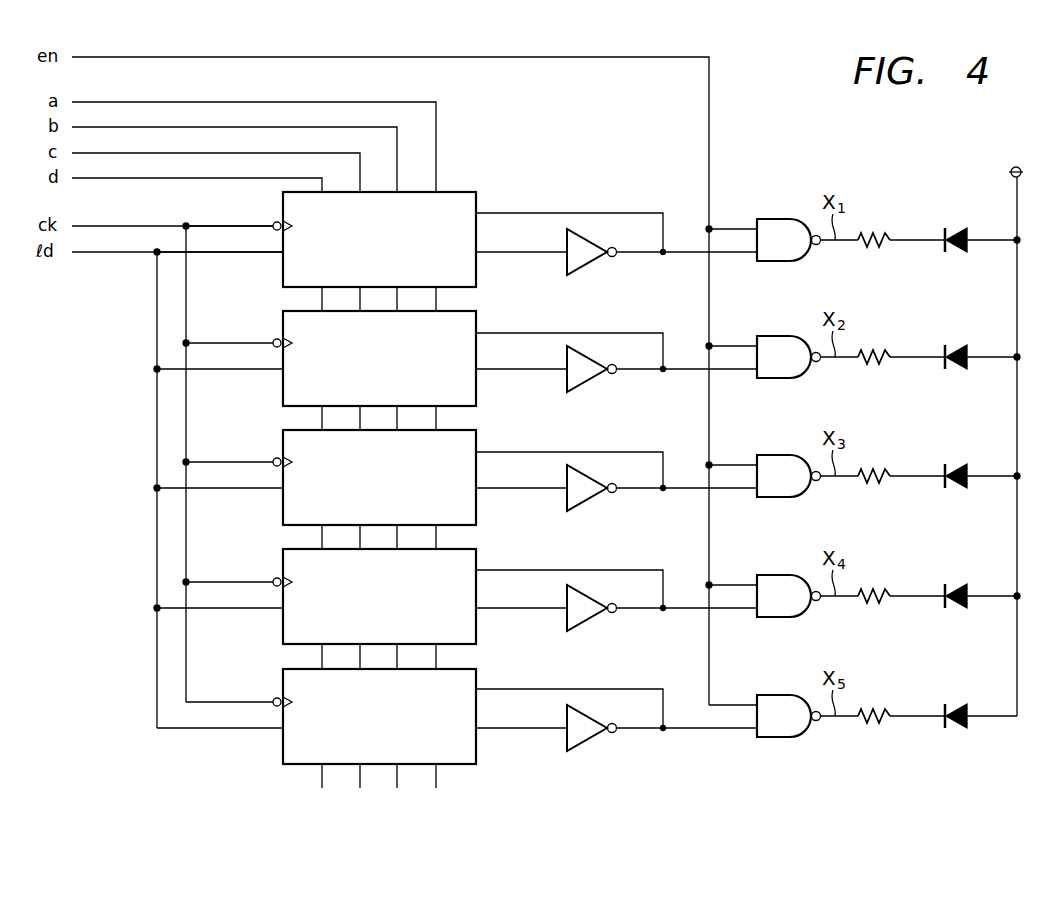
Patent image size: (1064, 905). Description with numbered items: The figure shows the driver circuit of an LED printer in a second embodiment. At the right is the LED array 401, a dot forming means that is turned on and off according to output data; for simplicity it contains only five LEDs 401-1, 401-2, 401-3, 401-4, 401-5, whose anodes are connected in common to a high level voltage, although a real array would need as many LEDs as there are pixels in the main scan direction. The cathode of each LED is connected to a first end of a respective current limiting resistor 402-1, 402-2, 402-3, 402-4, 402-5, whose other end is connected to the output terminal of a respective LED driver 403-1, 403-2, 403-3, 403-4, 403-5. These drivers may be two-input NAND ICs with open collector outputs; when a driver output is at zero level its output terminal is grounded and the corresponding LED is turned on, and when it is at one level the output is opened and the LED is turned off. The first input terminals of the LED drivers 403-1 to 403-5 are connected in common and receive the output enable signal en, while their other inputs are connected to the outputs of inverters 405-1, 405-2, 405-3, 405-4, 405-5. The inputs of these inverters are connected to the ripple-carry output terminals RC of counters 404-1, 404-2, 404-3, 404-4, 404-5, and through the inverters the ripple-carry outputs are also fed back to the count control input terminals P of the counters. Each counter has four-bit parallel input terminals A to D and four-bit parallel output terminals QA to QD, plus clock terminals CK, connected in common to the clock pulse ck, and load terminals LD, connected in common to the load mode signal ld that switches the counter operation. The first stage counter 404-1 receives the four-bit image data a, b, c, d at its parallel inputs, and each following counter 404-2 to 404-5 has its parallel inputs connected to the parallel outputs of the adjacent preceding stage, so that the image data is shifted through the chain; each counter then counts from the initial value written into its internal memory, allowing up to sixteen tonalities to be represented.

The LED array 401 is at (950, 226).
The LED 401-1 is at (953, 252).
The LED 401-2 is at (953, 369).
The LED 401-3 is at (953, 488).
The LED 401-4 is at (953, 608).
The LED 401-5 is at (960, 728).
The current limiting resistor 402-1 is at (866, 247).
The current limiting resistor 402-2 is at (866, 364).
The current limiting resistor 402-3 is at (866, 483).
The current limiting resistor 402-4 is at (866, 603).
The current limiting resistor 402-5 is at (872, 723).
The LED driver 403-1 is at (768, 262).
The LED driver 403-2 is at (768, 379).
The LED driver 403-3 is at (768, 498).
The LED driver 403-4 is at (768, 618).
The LED driver 403-5 is at (772, 738).
The counter 404-1 is at (476, 197).
The counter 404-2 is at (476, 316).
The counter 404-3 is at (462, 430).
The counter 404-4 is at (468, 549).
The counter 404-5 is at (468, 669).
The inverter 405-1 is at (590, 263).
The inverter 405-2 is at (590, 380).
The inverter 405-3 is at (590, 499).
The inverter 405-4 is at (590, 619).
The inverter 405-5 is at (590, 739).